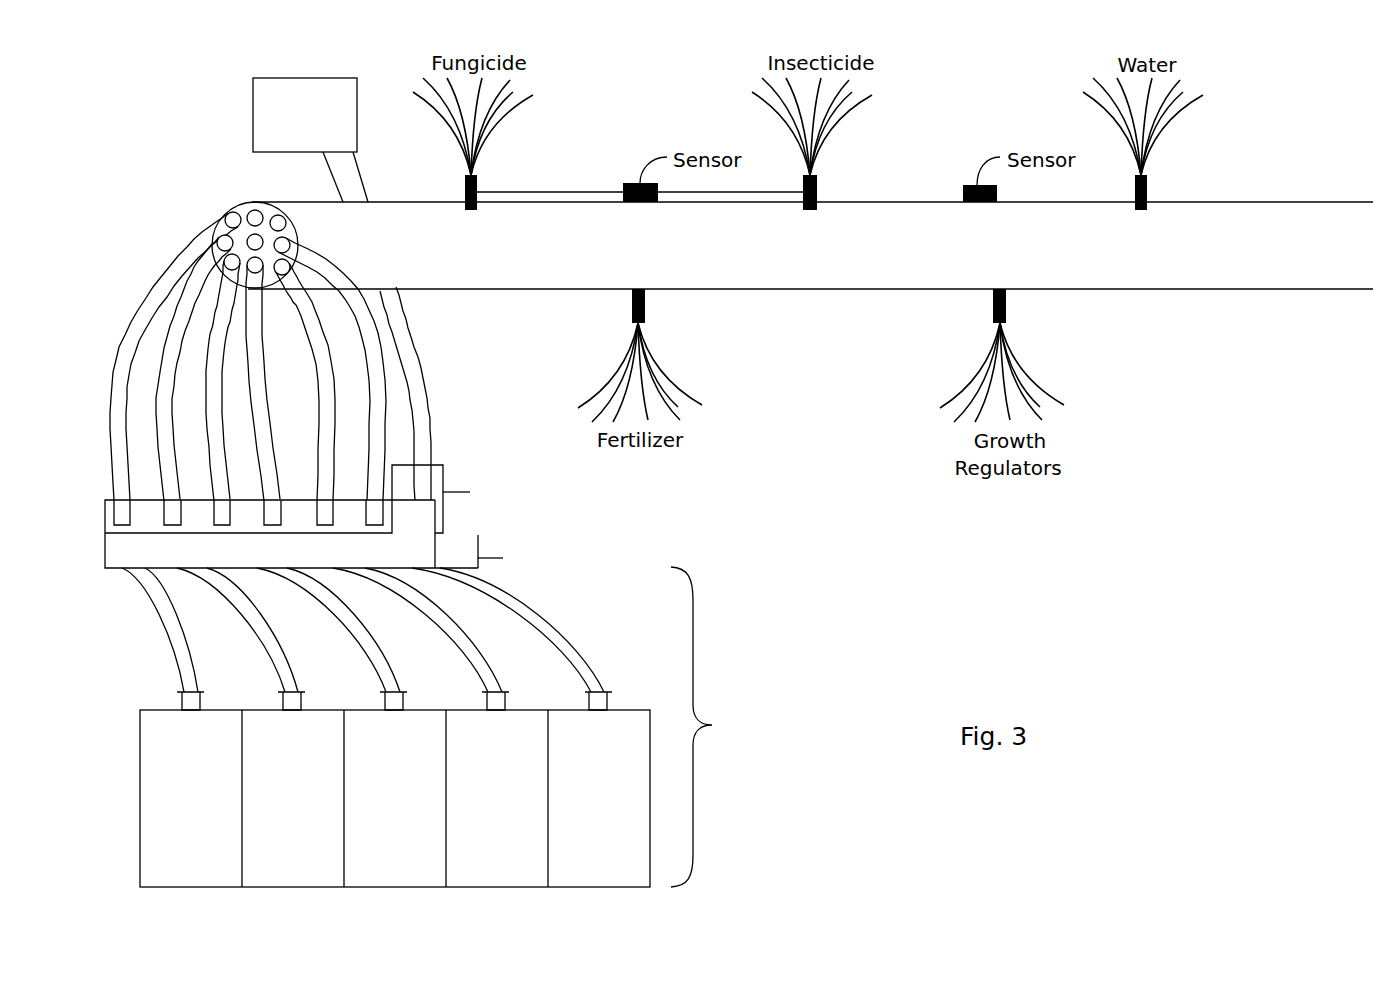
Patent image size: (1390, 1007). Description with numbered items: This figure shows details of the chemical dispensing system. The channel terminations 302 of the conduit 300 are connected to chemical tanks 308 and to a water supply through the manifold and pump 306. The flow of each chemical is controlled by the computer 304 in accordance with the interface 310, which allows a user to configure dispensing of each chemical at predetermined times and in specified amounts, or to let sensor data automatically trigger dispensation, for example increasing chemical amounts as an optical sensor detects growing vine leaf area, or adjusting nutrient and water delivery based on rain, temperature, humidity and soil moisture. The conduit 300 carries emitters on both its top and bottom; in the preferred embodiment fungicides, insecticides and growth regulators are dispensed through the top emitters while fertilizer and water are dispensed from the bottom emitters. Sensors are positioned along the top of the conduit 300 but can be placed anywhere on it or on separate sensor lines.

The conduit 300 is at (582, 254).
The channel terminations 302 is at (111, 263).
The computer 304 is at (443, 472).
The manifold and pump 306 is at (478, 540).
The premixed chemical tanks 308 is at (445, 743).
The interface 310 is at (342, 289).